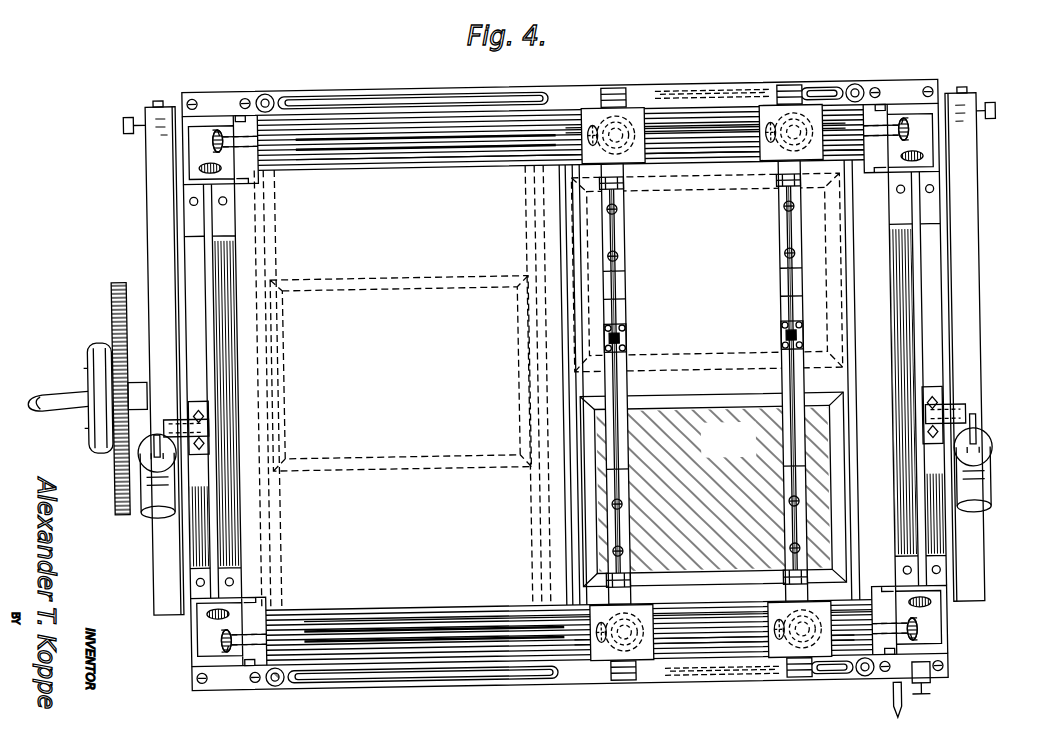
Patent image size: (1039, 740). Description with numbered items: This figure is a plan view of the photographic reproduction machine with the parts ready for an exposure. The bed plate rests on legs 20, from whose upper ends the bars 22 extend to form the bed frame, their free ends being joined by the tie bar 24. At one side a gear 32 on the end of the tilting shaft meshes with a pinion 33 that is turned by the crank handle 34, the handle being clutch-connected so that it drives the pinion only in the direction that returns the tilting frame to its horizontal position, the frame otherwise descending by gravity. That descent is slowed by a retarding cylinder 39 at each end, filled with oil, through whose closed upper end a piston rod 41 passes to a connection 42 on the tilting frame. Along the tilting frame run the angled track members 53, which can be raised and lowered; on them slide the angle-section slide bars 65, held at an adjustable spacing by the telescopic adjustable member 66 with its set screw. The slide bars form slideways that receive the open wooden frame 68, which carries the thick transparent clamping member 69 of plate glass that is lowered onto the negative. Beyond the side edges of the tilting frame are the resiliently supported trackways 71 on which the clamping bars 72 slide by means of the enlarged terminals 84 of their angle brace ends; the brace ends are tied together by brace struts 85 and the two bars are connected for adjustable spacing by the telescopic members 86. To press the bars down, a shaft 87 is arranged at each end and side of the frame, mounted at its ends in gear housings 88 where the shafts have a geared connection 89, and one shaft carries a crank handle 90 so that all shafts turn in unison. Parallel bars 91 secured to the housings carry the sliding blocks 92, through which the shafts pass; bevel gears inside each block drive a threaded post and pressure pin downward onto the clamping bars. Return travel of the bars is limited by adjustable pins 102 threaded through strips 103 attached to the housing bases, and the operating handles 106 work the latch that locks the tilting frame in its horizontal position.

The legs 20 is at (150, 565).
The bars 22 is at (152, 256).
The tie bar 24 is at (177, 100).
The gear 32 is at (113, 472).
The pinion 33 is at (118, 396).
The crank handle 34 is at (88, 382).
The cylinder 39 is at (148, 506).
The piston rod 41 is at (152, 442).
The connection of piston rod to tilting frame 42 is at (186, 428).
The track members 53 is at (431, 135).
The slide bars 65 is at (568, 386).
The adjustable member 66 is at (685, 150).
The frame 68 is at (702, 400).
The transparent clamping member 69 is at (713, 489).
The trackways 71 is at (545, 100).
The clamping bars 72 is at (627, 322).
The enlarged terminals 84 is at (620, 89).
The brace struts 85 is at (620, 304).
The spacing members 86 is at (676, 95).
The shaft 87 is at (461, 145).
The gear housings 88 is at (208, 128).
The geared connection 89 is at (214, 160).
The crank handle 90 is at (900, 700).
The bars 91 is at (400, 118).
The blocks 92 is at (600, 118).
The pins 102 is at (268, 90).
The strips 103 is at (281, 93).
The operating handles 106 is at (130, 118).